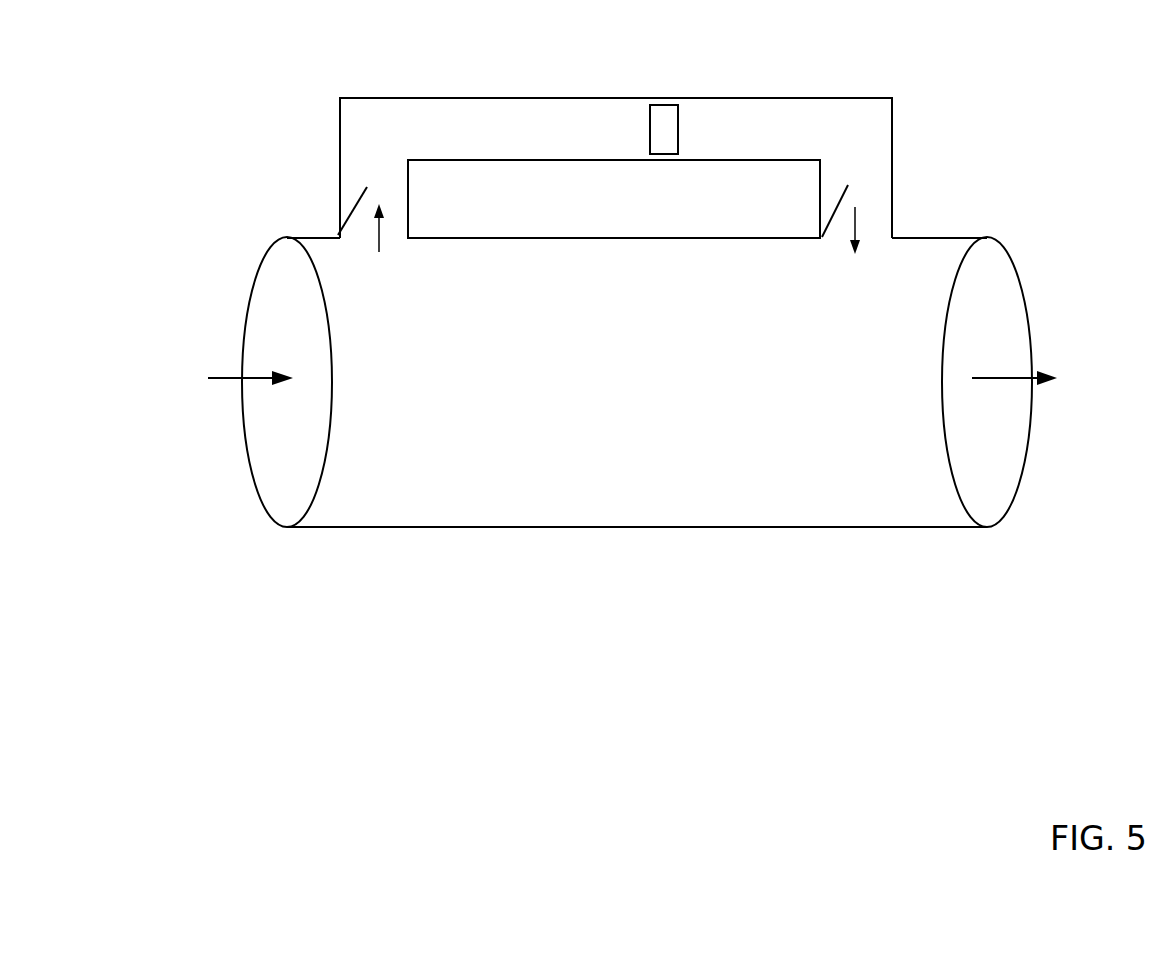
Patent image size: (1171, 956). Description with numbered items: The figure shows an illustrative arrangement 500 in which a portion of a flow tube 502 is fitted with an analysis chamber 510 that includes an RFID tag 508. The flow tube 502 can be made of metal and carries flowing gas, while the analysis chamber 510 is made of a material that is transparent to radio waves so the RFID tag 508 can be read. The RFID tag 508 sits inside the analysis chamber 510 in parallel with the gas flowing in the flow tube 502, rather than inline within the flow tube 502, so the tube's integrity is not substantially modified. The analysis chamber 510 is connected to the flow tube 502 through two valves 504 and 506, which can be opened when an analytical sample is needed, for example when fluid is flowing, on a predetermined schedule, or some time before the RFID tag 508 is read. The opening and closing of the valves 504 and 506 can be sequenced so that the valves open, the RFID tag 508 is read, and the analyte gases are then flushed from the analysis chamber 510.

The air handling system 500 is at (260, 88).
The flow tube 502 is at (963, 238).
The valve 504 is at (347, 205).
The valve 506 is at (850, 188).
The RFID tag 508 is at (668, 117).
The analysis chamber 510 is at (468, 110).